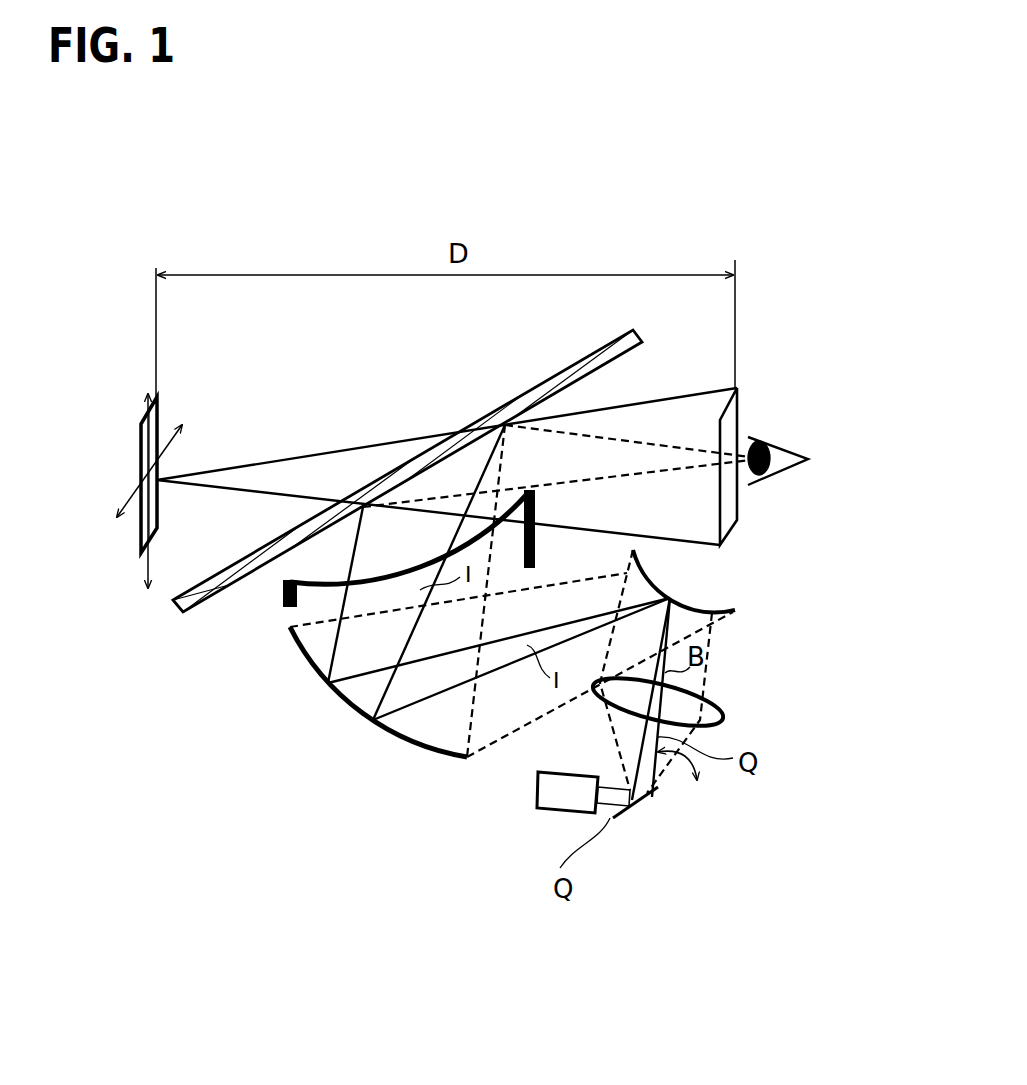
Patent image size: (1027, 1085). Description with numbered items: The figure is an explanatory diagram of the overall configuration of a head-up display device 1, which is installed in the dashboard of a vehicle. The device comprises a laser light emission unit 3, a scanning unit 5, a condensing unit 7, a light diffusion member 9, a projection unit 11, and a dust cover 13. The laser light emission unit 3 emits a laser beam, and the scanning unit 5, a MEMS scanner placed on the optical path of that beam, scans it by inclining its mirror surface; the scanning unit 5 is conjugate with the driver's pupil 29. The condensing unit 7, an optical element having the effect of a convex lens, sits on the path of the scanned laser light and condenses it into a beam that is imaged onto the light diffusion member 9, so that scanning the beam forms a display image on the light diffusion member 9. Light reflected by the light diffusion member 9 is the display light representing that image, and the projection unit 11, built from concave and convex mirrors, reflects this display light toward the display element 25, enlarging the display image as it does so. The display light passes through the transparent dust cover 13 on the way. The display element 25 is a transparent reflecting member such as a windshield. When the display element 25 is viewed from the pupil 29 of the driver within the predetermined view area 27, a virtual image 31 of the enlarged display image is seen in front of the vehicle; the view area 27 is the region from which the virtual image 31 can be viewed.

The head-up display device 1 is at (303, 730).
The laser light emission unit 3 is at (573, 770).
The scanning unit 5 is at (620, 820).
The condensing unit 7 is at (723, 712).
The light diffusion member 9 is at (673, 592).
The projection unit 11 is at (410, 743).
The dust cover 13 is at (340, 588).
The display element 25 is at (513, 398).
The view area 27 is at (741, 400).
The pupil 29 is at (763, 478).
The virtual image 31 is at (160, 401).